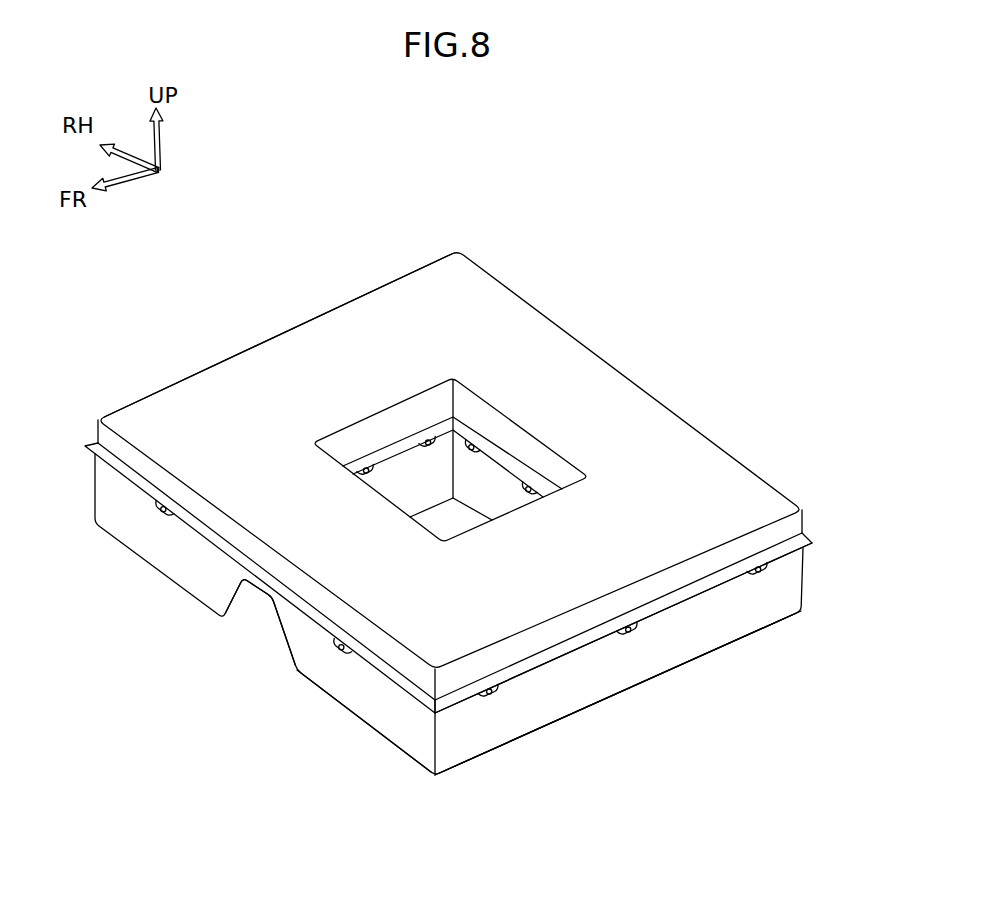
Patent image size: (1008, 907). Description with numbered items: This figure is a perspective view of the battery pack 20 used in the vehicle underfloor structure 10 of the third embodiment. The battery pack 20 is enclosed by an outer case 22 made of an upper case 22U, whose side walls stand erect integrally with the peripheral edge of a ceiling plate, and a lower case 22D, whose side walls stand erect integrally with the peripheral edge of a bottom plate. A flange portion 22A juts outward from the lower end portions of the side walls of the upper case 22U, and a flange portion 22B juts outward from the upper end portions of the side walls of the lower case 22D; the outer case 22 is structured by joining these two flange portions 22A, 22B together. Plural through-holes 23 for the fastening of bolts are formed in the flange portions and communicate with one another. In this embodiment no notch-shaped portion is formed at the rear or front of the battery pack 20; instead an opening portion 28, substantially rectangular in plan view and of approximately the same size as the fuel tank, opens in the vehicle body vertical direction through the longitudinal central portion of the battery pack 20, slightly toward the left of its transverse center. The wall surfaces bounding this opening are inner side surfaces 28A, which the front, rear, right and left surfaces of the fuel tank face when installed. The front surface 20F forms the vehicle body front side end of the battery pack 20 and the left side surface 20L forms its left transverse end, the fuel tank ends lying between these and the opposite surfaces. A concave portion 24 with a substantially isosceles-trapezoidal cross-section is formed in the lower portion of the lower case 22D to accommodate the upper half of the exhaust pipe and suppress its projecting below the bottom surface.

The vehicle underfloor structure 10 is at (500, 583).
The battery pack 20 is at (472, 247).
The front surface 20F is at (376, 710).
The left side surface 20L is at (610, 672).
The outer case 22 is at (630, 425).
The upper case 22U is at (252, 388).
The flange portion 22A is at (812, 541).
The flange portion 22B is at (680, 605).
The lower case 22D is at (562, 723).
The through-holes 23 is at (473, 438).
The concave portion 24 is at (245, 600).
The opening portion 28 is at (553, 458).
The inner side surfaces 28A is at (407, 427).